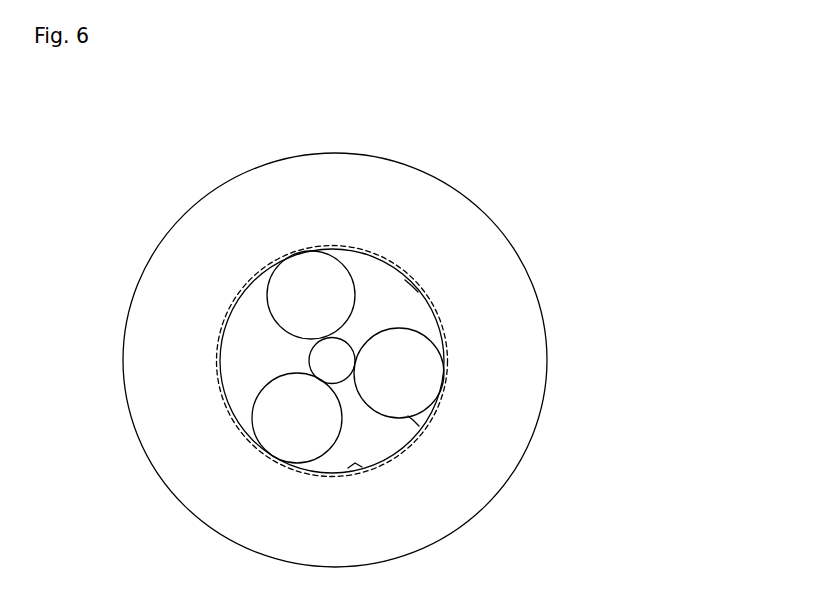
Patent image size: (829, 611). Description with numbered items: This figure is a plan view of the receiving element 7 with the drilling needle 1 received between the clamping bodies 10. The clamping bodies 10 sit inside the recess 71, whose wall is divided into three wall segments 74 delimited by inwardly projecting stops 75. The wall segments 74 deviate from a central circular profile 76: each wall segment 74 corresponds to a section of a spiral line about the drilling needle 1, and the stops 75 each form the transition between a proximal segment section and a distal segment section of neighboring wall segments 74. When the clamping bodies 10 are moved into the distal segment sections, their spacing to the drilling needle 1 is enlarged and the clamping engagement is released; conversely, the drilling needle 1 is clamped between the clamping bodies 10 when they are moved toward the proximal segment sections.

The cable 7 is at (139, 247).
The clamping bodies 10 is at (310, 282).
The central circular profile 76 is at (379, 253).
The inwardly projecting stops 75 is at (410, 283).
The recess 71 is at (240, 340).
The drilling needle 1 is at (330, 358).
The wall segments 74 is at (417, 430).